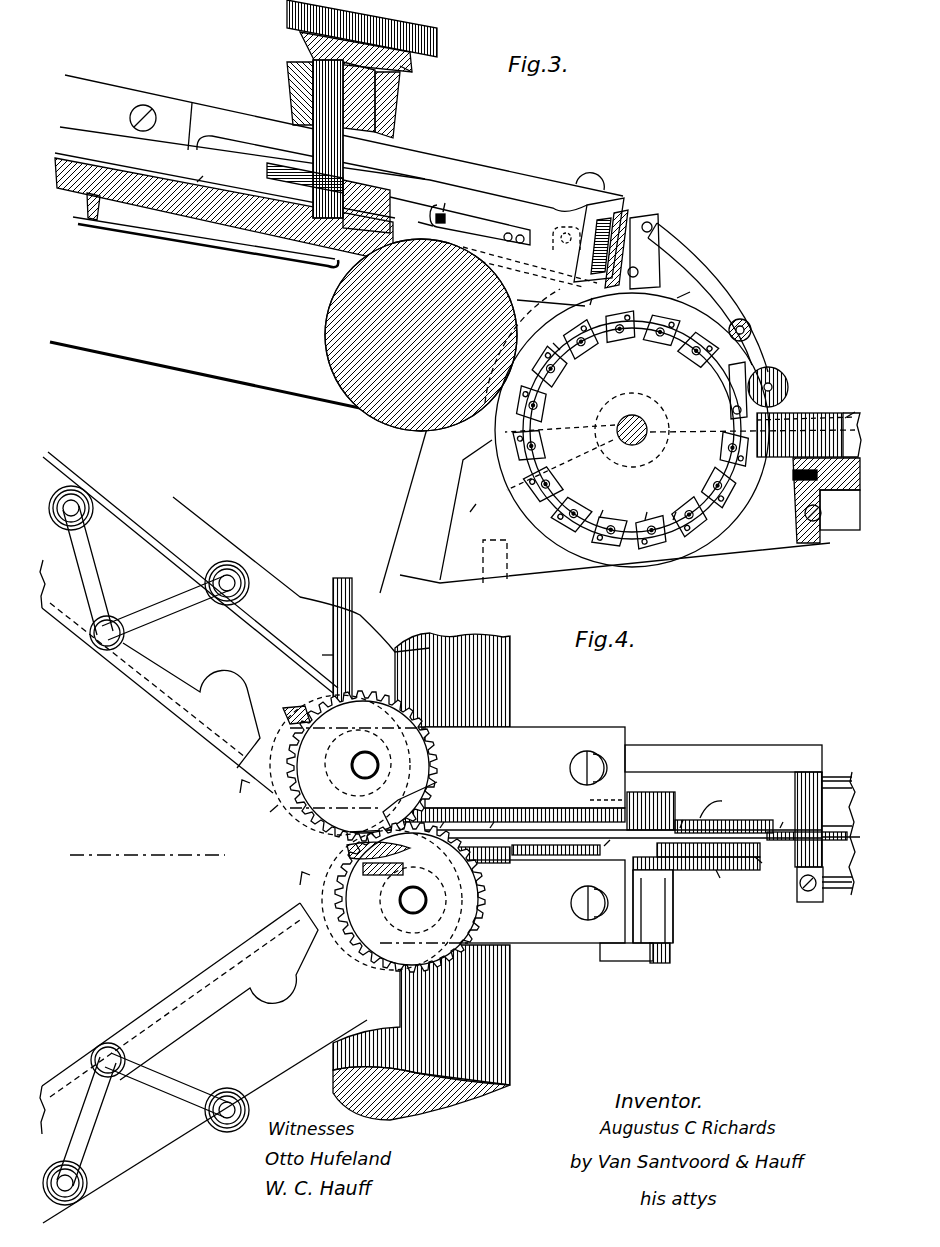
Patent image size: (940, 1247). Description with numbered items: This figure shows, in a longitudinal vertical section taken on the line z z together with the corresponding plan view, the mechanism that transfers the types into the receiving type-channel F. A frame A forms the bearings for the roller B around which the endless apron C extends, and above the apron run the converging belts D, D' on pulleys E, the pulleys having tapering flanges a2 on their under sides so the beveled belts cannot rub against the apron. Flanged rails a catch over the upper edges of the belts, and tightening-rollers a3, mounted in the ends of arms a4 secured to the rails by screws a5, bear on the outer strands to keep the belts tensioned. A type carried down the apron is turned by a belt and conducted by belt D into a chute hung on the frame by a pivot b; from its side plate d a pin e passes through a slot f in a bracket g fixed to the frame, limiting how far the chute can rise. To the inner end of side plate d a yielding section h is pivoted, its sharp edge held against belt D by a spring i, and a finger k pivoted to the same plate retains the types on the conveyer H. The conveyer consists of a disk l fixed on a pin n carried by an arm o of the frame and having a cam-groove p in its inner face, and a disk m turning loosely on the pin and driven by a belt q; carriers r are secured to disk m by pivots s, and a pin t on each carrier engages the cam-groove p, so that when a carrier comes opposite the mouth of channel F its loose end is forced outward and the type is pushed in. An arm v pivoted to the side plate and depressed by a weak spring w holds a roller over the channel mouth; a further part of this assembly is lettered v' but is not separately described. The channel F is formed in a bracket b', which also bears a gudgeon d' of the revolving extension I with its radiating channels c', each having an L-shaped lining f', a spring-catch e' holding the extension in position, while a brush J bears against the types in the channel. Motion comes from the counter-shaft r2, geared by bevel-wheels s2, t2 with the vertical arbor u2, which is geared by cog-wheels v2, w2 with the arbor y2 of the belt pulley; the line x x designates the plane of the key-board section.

In FIG. 3, the frame A is at (445, 334).
In FIG. 4, the frame A is at (525, 835).
In FIG. 3, the roller B is at (421, 335).
In FIG. 4, the roller B is at (421, 849).
In FIG. 3, the endless apron C is at (226, 379).
In FIG. 4, the belt D is at (236, 860).
In FIG. 3, the belt D' is at (225, 210).
In FIG. 4, the belt D' is at (190, 572).
In FIG. 3, the pulley E is at (328, 198).
In FIG. 4, the pulley E is at (275, 813).
In FIG. 4, the receiving type-channel F is at (782, 820).
In FIG. 3, the conveyer H is at (627, 428).
In FIG. 4, the conveyer H is at (703, 830).
In FIG. 3, the revolving extension I is at (809, 435).
In FIG. 4, the revolving extension I is at (823, 819).
In FIG. 4, the brush J is at (801, 884).
In FIG. 4, the flanged rail a is at (179, 847).
In FIG. 3, the tapering flange a2 is at (416, 219).
In FIG. 4, the tightening-roller a3 is at (147, 841).
In FIG. 4, the arm a4 is at (143, 846).
In FIG. 4, the screw a5 is at (107, 846).
In FIG. 3, the pivot b is at (644, 251).
In FIG. 3, the bracket b' is at (814, 500).
In FIG. 4, the bracket b' is at (723, 806).
In FIG. 3, the radiating channel c' is at (840, 510).
In FIG. 4, the radiating channel c' is at (838, 834).
In FIG. 3, the side plate d is at (395, 231).
In FIG. 4, the side plate d is at (489, 830).
In FIG. 3, the gudgeon d' is at (810, 509).
In FIG. 3, the pin e is at (593, 246).
In FIG. 3, the spring-catch e' is at (849, 409).
In FIG. 3, the slot f is at (604, 249).
In FIG. 3, the L-shaped lining f' is at (792, 474).
In FIG. 3, the bracket g is at (588, 240).
In FIG. 4, the bracket g is at (605, 848).
In FIG. 3, the section h is at (442, 207).
In FIG. 4, the section h is at (681, 819).
In FIG. 3, the spring i is at (460, 221).
In FIG. 3, the finger k is at (683, 289).
In FIG. 4, the finger k is at (612, 835).
In FIG. 3, the disk l is at (736, 428).
In FIG. 4, the disk m is at (716, 878).
In FIG. 3, the pin n is at (598, 518).
In FIG. 4, the pin n is at (439, 830).
In FIG. 3, the arm o is at (469, 513).
In FIG. 4, the arm o is at (639, 916).
In FIG. 3, the cam-groove p is at (643, 522).
In FIG. 4, the cam-groove p is at (788, 836).
In FIG. 3, the belt q is at (673, 521).
In FIG. 4, the belt q is at (760, 866).
In FIG. 3, the carrier r is at (632, 430).
In FIG. 3, the counter-shaft r2 is at (356, 50).
In FIG. 4, the counter-shaft r2 is at (321, 654).
In FIG. 3, the pivot s is at (632, 421).
In FIG. 3, the bevel-wheel s2 is at (353, 139).
In FIG. 3, the pin t is at (588, 298).
In FIG. 3, the bevel-wheel t2 is at (410, 68).
In FIG. 3, the vertical arbor u2 is at (362, 28).
In FIG. 4, the vertical arbor u2 is at (365, 765).
In FIG. 3, the arm v is at (708, 321).
In FIG. 3, the roller v' is at (737, 325).
In FIG. 4, the cog-wheel v2 is at (353, 766).
In FIG. 3, the spring w is at (773, 384).
In FIG. 4, the cog-wheel w2 is at (403, 897).
In FIG. 4, the section line x is at (632, 805).
In FIG. 4, the arbor y2 is at (413, 900).
In FIG. 4, the section line z is at (463, 847).